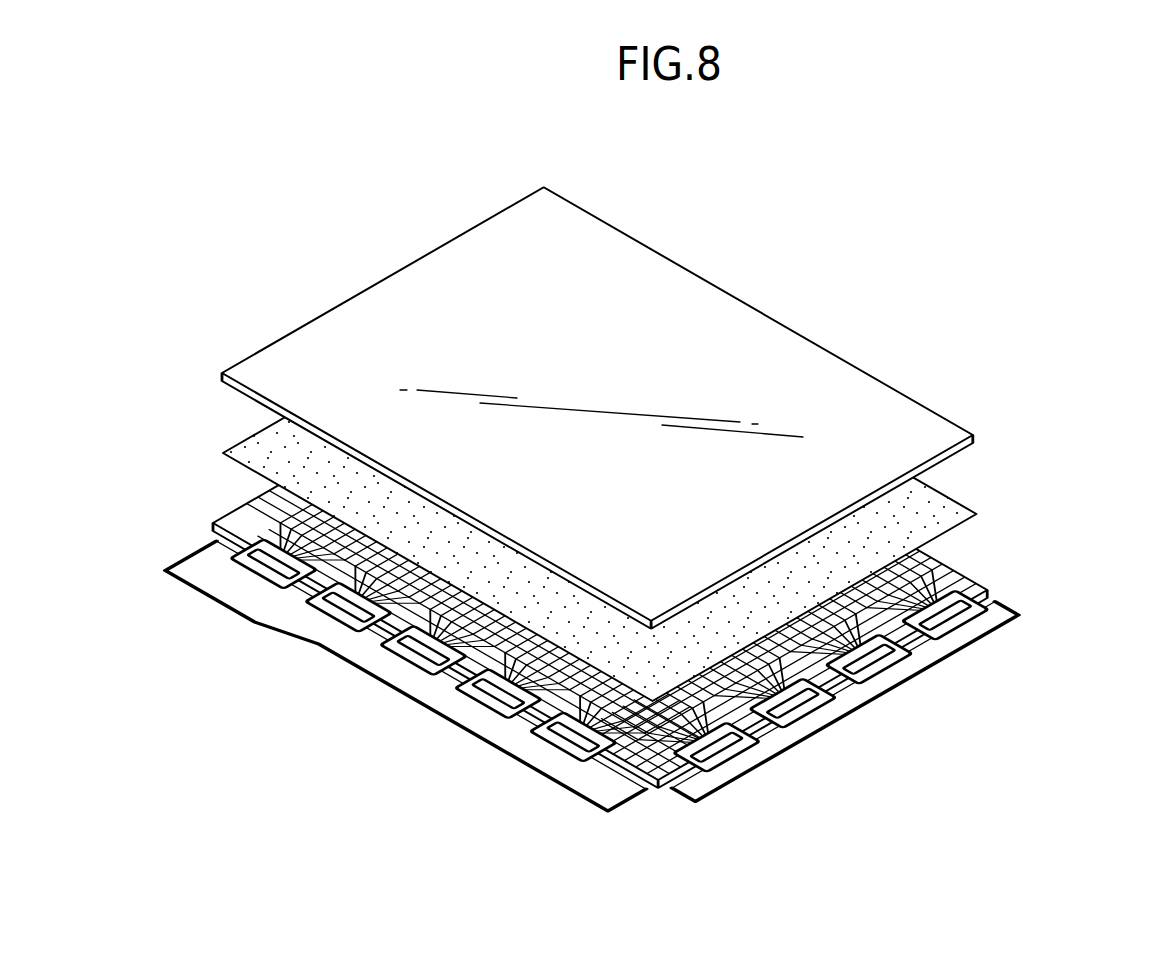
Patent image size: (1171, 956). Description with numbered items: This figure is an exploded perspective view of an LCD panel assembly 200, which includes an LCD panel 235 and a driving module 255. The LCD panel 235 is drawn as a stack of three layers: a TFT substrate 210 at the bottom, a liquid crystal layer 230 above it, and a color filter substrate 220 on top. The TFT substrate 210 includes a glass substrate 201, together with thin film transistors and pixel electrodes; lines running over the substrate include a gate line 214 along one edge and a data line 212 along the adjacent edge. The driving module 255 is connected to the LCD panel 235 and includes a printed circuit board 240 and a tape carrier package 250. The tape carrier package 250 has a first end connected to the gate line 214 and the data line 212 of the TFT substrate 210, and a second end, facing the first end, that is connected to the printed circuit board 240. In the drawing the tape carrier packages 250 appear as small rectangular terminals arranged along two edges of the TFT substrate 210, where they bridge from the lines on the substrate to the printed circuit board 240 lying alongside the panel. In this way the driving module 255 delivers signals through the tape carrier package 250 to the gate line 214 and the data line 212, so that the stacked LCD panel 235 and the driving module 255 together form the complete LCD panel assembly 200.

The LCD panel assembly 200 is at (1092, 355).
The glass substrate 201 is at (598, 763).
The TFT substrate 210 is at (611, 600).
The data line 212 is at (622, 737).
The gate line 214 is at (760, 735).
The color filter substrate 220 is at (1023, 523).
The liquid crystal layer 230 is at (960, 496).
The LCD panel 235 is at (641, 527).
The printed circuit board 240 is at (932, 653).
The tape carrier package 250 is at (958, 622).
The driving module 255 is at (853, 696).